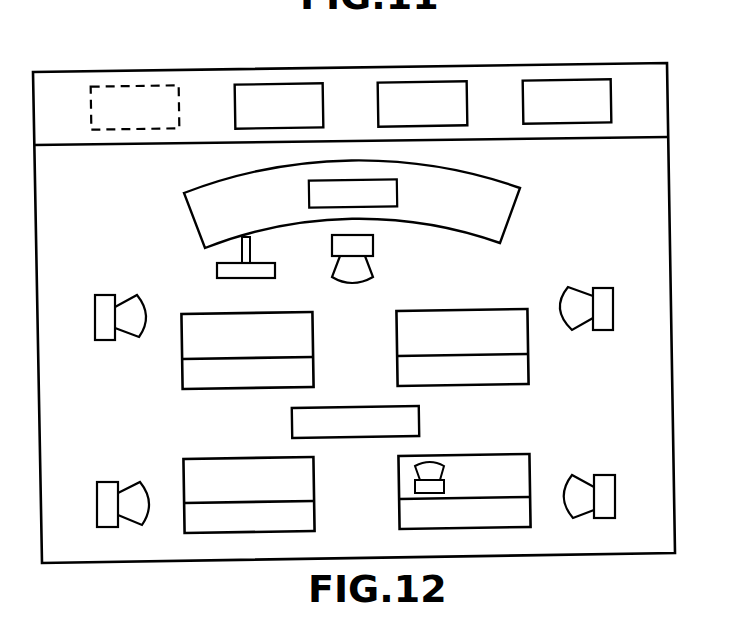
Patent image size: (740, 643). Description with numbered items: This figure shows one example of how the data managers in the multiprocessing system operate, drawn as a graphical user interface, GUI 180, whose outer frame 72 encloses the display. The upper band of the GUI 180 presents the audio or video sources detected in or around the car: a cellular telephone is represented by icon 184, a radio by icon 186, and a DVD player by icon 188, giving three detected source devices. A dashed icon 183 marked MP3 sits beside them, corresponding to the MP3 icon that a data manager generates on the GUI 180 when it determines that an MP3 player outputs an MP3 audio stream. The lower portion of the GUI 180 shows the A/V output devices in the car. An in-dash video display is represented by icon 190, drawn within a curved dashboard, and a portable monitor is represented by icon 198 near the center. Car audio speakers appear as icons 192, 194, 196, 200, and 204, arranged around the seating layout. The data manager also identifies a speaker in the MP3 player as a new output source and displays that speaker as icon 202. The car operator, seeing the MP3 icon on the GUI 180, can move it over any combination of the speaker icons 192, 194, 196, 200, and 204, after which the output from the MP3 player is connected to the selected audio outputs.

The home entertainment system 72 is at (85, 60).
The GUI 180 is at (525, 63).
The MP3 player 183 is at (157, 85).
The icon 184 is at (302, 83).
The icon 186 is at (445, 82).
The icon 188 is at (588, 80).
The icon 190 is at (397, 192).
The icon 192 is at (373, 244).
The icon 194 is at (108, 295).
The icon 196 is at (605, 287).
The icon 198 is at (419, 415).
The icon 200 is at (110, 482).
The icon 202 is at (444, 486).
The icon 204 is at (607, 475).